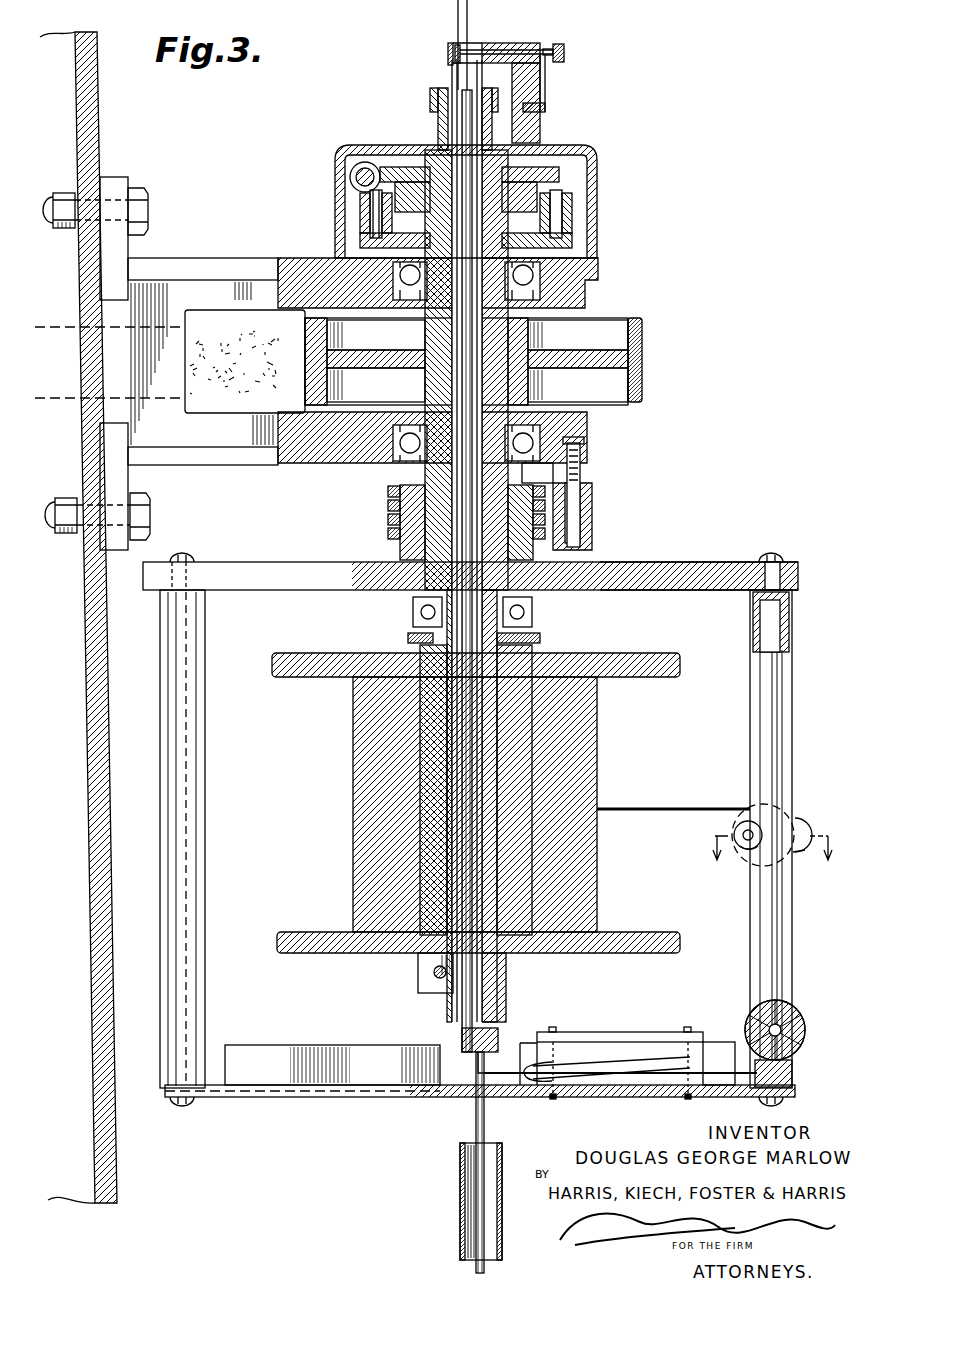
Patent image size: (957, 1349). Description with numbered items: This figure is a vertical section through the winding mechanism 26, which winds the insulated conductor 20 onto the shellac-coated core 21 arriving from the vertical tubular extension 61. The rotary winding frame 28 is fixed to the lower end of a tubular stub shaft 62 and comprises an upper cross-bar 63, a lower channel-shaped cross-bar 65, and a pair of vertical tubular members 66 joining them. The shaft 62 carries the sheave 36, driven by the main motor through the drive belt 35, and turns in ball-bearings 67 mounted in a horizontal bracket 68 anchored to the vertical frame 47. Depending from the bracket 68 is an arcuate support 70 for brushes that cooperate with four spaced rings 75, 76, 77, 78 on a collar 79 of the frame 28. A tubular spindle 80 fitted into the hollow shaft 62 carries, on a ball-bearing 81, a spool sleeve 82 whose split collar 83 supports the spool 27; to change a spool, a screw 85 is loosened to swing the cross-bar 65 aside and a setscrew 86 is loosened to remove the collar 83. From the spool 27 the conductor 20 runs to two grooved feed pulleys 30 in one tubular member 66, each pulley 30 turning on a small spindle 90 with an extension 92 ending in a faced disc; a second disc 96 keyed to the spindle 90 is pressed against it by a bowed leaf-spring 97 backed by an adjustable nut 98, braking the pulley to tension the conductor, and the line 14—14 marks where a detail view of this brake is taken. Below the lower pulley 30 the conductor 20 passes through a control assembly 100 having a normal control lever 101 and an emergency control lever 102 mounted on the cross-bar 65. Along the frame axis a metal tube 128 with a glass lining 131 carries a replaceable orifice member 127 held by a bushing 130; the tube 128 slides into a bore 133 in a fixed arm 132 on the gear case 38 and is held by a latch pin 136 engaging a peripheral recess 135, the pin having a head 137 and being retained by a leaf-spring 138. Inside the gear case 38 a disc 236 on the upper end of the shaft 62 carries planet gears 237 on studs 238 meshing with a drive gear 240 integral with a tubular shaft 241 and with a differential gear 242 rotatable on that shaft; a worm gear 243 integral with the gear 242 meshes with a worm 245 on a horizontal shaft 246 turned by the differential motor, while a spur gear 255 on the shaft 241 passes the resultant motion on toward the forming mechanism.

The section line 14- 14 is at (770, 847).
The insulated conductor 20 is at (633, 806).
The core 21 is at (476, 1167).
The winding mechanism 26 is at (808, 766).
The spool 27 is at (290, 675).
The winding frame 28 is at (221, 564).
The feed pulleys 30 is at (800, 820).
The drive belt 35 is at (645, 362).
The sheave 36 is at (638, 335).
The gear case 38 is at (598, 218).
The vertical frame 47 is at (93, 150).
The tubular extension 61 is at (460, 1230).
The tubular stub shaft 62 is at (525, 392).
The upper cross-bar 63 is at (698, 564).
The lower channel-shaped cross-bar 65 is at (283, 1094).
The vertical tubular members 66 is at (793, 640).
The ball-bearings 67 is at (585, 292).
The horizontal bracket 68 is at (197, 262).
The arcuate support 70 is at (592, 528).
The ring 75 is at (388, 490).
The ring 76 is at (388, 507).
The ring 77 is at (388, 522).
The ring 78 is at (388, 538).
The collar 79 is at (525, 478).
The tubular spindle 80 is at (597, 703).
The ball-bearing 81 is at (532, 612).
The spool sleeve 82 is at (500, 757).
The split collar 83 is at (418, 962).
The screw 85 is at (795, 1087).
The setscrew 86 is at (436, 975).
The spindle 90 is at (745, 833).
The extension 92 is at (792, 1020).
The second disc 96 is at (800, 855).
The bowed leaf-spring 97 is at (755, 855).
The adjustable nut 98 is at (745, 830).
The control assembly 100 is at (604, 1020).
The normal control lever 101 is at (668, 1057).
The emergency control lever 102 is at (535, 1062).
The orifice member 127 is at (473, 1054).
The metal tube 128 is at (478, 858).
The bushing 130 is at (462, 1036).
The glass lining 131 is at (460, 800).
The fixed arm 132 is at (505, 45).
The bore 133 is at (455, 48).
The peripheral recess 135 is at (472, 52).
The latch pin 136 is at (545, 47).
The head 137 is at (566, 53).
The leaf-spring 138 is at (547, 78).
The disc 236 is at (565, 240).
The planet gears 237 is at (570, 200).
The studs 238 is at (560, 182).
The drive gear 240 is at (410, 222).
The tubular shaft 241 is at (438, 130).
The differential gear 242 is at (512, 190).
The worm gear 243 is at (393, 172).
The worm 245 is at (362, 193).
The horizontal shaft 246 is at (352, 170).
The spur gear 255 is at (436, 108).